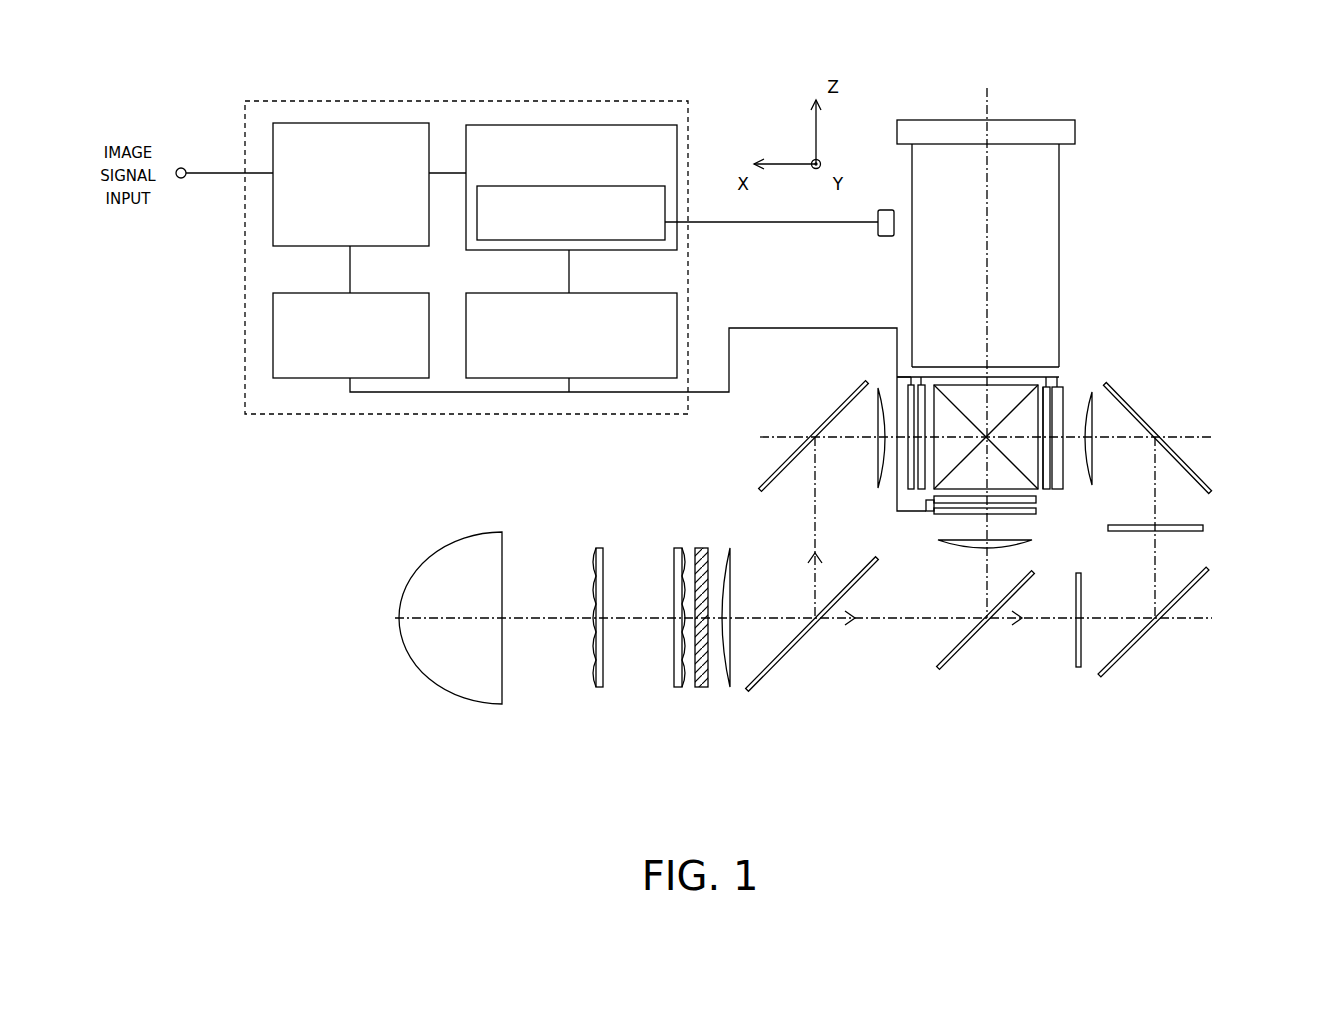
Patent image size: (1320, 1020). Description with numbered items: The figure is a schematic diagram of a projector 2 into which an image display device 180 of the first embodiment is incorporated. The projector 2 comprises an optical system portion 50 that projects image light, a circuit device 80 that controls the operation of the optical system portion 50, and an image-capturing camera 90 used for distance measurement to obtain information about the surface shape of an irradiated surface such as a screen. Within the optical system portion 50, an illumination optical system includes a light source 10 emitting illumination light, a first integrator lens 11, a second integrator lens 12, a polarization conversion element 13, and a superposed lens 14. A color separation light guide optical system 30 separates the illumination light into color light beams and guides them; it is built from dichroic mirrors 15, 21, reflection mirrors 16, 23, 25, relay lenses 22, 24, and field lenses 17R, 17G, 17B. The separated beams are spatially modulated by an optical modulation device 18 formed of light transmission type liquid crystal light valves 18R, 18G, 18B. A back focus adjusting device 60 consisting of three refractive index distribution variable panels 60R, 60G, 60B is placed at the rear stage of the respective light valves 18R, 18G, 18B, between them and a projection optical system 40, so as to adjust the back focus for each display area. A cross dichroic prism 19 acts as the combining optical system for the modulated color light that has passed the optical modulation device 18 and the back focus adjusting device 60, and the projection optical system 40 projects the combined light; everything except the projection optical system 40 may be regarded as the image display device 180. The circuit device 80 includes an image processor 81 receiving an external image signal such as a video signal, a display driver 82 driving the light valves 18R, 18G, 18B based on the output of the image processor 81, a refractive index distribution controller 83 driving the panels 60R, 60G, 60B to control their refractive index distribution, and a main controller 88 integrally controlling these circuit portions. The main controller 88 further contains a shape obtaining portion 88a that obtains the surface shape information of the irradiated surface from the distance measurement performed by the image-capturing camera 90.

The projector 2 is at (1231, 70).
The light source 10 is at (450, 678).
The first integrator lens 11 is at (598, 687).
The second integrator lens 12 is at (680, 687).
The polarization conversion element 13 is at (702, 548).
The superposed lens 14 is at (732, 582).
The dichroic mirror 15 is at (775, 665).
The reflection mirror 16 is at (766, 488).
The field lens 17R is at (883, 432).
The field lens 17G is at (1032, 543).
The field lens 17B is at (1092, 425).
The optical modulation device 18 is at (903, 370).
The liquid crystal light valve 18R is at (921, 490).
The liquid crystal light valve 18G is at (1036, 511).
The liquid crystal light valve 18B is at (1068, 395).
The cross dichroic prism 19 is at (1050, 370).
The dichroic mirror 21 is at (945, 665).
The relay lens 22 is at (1079, 667).
The reflection mirror 23 is at (1190, 595).
The relay lens 24 is at (1203, 528).
The reflection mirror 25 is at (1180, 450).
The color separation light guide optical system 30 is at (623, 510).
The projection optical system 40 is at (1059, 190).
The optical system portion 50 is at (1190, 243).
The back focus adjusting device 60 is at (1046, 387).
The refractive index distribution variable panel 60R is at (912, 490).
The refractive index distribution variable panel 60G is at (1036, 499).
The refractive index distribution variable panel 60B is at (1055, 390).
The circuit device 80 is at (245, 258).
The image processor 81 is at (355, 123).
The display driver 82 is at (273, 340).
The refractive index distribution controller 83 is at (516, 293).
The main controller 88 is at (562, 140).
The shape obtaining portion 88a is at (642, 186).
The image-capturing camera 90 is at (886, 236).
The image display device 180 is at (1245, 270).